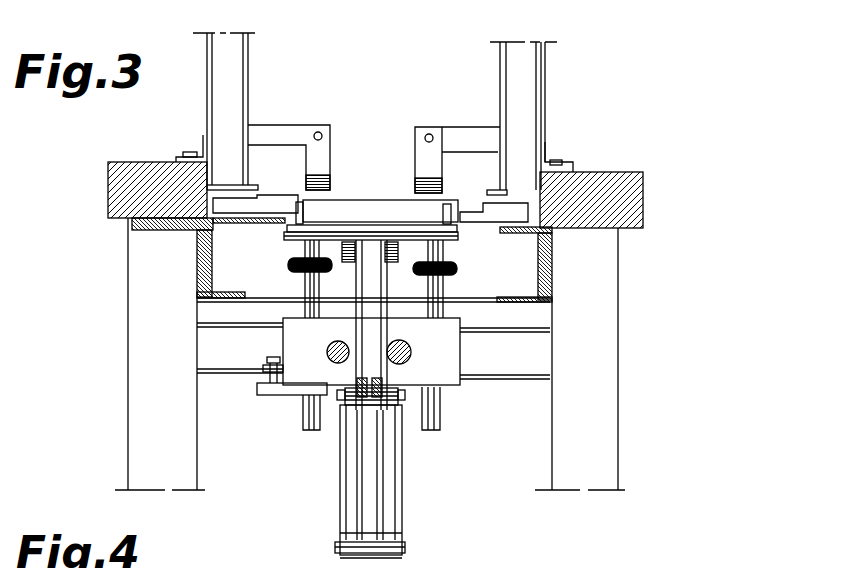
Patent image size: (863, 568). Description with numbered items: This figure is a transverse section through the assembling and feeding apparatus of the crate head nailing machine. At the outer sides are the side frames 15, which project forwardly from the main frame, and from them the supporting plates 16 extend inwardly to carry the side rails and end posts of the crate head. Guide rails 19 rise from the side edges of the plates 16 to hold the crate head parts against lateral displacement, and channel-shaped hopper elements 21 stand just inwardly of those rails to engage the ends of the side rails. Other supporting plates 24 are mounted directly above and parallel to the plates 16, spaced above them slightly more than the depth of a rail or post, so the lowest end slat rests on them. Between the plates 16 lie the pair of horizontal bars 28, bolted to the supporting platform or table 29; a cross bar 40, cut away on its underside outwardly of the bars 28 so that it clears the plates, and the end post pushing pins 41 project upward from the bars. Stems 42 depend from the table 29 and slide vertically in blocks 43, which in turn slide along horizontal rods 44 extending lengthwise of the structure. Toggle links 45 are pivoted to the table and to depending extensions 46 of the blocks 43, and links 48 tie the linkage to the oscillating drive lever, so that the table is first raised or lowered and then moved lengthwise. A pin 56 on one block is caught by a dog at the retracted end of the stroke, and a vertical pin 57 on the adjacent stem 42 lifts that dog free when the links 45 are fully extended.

The side frames 15 is at (195, 257).
The supporting plates 16 is at (252, 223).
The guide rails 19 is at (140, 183).
The hopper elements 21 is at (235, 90).
The supporting plates 24 is at (247, 190).
The horizontal bars 28 is at (297, 225).
The supporting platform or table 29 is at (335, 235).
The cross bar 40 is at (365, 208).
The end post pushing pins 41 is at (310, 182).
The stems 42 is at (442, 283).
The blocks 43 is at (462, 353).
The horizontal rods 44 is at (327, 343).
The toggle links 45 is at (383, 297).
The depending extensions 46 is at (367, 482).
The links 48 is at (387, 390).
The pin 56 is at (262, 375).
The vertical pin 57 is at (267, 384).